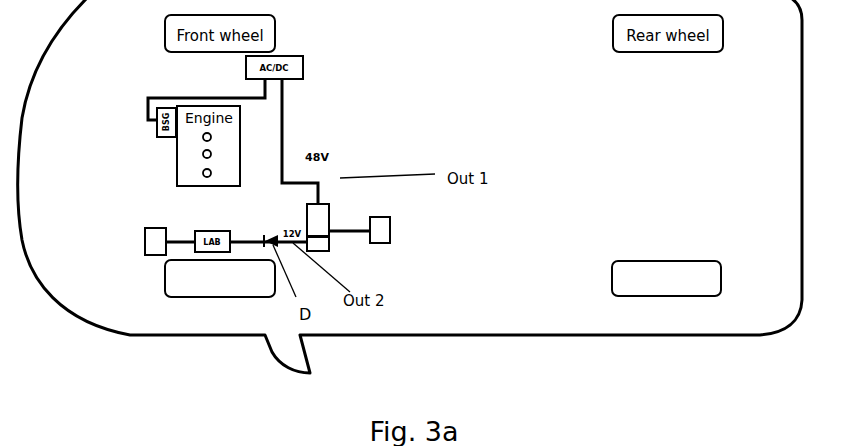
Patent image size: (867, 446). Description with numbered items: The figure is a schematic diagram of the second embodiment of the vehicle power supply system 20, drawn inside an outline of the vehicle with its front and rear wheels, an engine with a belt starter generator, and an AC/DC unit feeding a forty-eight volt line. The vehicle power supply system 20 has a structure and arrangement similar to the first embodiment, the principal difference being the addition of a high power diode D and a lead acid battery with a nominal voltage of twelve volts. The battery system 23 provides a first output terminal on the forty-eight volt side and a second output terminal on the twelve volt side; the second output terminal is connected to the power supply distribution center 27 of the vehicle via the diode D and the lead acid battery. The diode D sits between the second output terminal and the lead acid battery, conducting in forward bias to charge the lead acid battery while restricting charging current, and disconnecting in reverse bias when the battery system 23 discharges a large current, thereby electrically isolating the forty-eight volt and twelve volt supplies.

The vehicle power supply system 20 is at (350, 165).
The battery system 23 is at (320, 243).
The power supply distribution center 27 is at (148, 252).